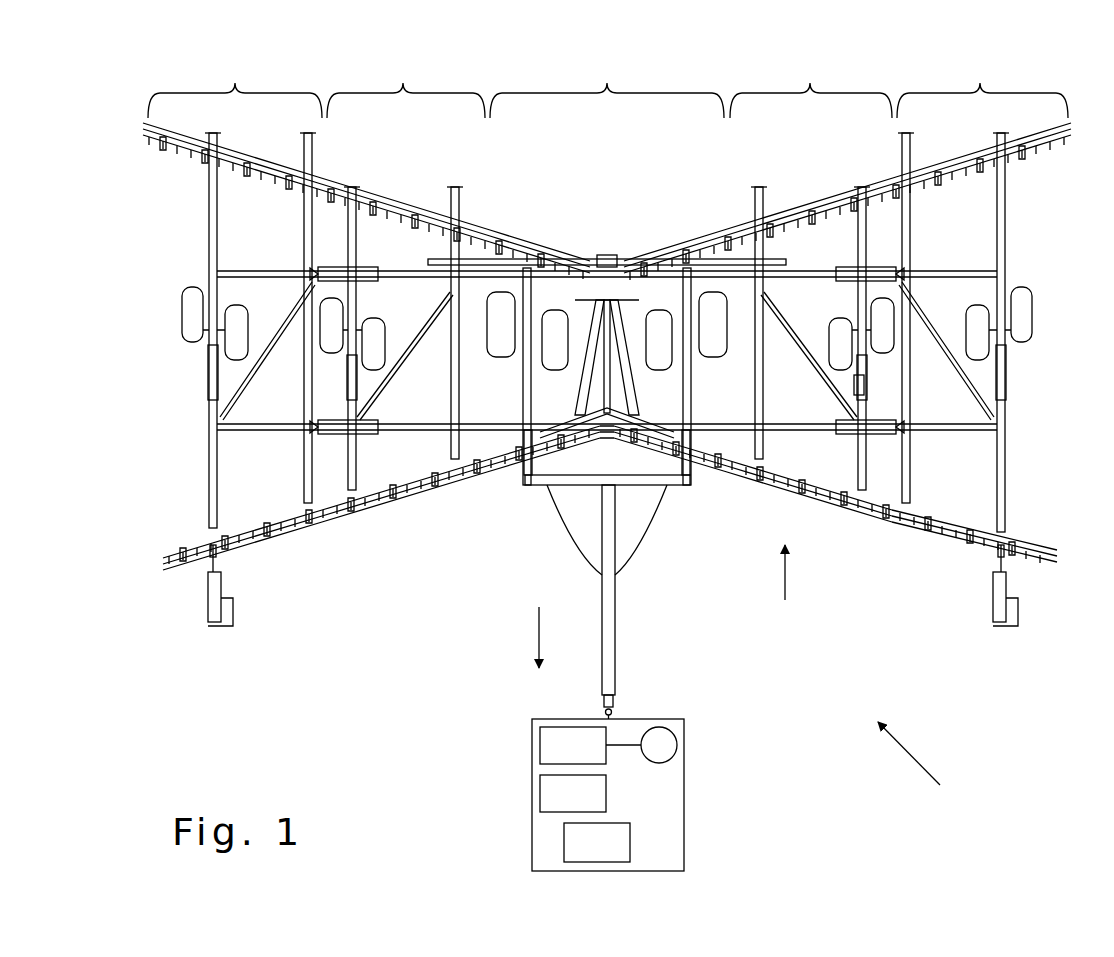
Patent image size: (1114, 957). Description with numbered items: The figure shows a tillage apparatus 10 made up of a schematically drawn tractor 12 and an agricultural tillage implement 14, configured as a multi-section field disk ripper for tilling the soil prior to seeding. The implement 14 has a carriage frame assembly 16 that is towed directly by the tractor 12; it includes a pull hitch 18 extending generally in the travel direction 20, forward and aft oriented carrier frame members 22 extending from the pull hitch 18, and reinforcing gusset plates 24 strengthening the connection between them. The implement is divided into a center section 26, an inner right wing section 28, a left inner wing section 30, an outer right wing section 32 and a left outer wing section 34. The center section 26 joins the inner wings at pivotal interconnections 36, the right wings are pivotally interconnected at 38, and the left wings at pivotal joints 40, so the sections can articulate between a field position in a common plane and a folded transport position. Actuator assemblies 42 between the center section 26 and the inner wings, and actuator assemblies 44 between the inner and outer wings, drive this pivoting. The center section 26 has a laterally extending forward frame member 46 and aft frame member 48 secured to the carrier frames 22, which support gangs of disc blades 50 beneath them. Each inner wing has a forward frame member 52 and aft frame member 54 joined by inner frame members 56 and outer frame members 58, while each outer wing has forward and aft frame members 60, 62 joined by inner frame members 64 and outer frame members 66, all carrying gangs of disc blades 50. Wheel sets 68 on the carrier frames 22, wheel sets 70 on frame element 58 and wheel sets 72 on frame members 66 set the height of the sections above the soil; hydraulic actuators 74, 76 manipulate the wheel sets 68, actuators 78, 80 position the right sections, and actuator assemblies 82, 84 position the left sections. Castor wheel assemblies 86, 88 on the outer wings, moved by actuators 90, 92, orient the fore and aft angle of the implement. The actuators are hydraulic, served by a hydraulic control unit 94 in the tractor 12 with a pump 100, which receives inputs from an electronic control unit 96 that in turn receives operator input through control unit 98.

The tillage apparatus 10 is at (921, 762).
The tractor 12 is at (685, 780).
The agricultural tillage implement 14 is at (785, 583).
The carriage frame assembly 16 is at (690, 486).
The pull hitch 18 is at (616, 640).
The travel direction 20 is at (539, 624).
The carrier frame members 22 is at (530, 482).
The reinforcing gusset plates 24 is at (570, 528).
The center section 26 is at (607, 87).
The inner right wing section 28 is at (811, 87).
The left inner wing section 30 is at (406, 87).
The outer right wing section 32 is at (982, 87).
The left outer wing section 34 is at (235, 87).
The pivotal interconnections 36 is at (500, 215).
The pivotal interconnection 38 is at (895, 175).
The pivotal joints 40 is at (318, 175).
The actuator assemblies 42 is at (560, 256).
The actuator assemblies 44 is at (400, 268).
The forward frame member 46 is at (555, 445).
The aft frame member 48 is at (587, 254).
The gangs of disc blades 50 is at (252, 150).
The forward frame member 52 is at (408, 505).
The aft frame member 54 is at (442, 190).
The inner frame members 56 is at (450, 360).
The outer frame members 58 is at (450, 300).
The forward frame member 60 is at (200, 570).
The aft frame member 62 is at (185, 122).
The inner frame members 64 is at (304, 466).
The outer frame members 66 is at (208, 462).
The wheel sets 68 is at (494, 368).
The wheel sets 70 is at (378, 378).
The wheel sets 72 is at (196, 350).
The hydraulic actuator 74 is at (535, 385).
The hydraulic actuator 76 is at (682, 385).
The actuator 78 is at (852, 385).
The actuator 80 is at (1008, 385).
The actuator assembly 82 is at (330, 415).
The actuator assembly 84 is at (208, 385).
The castor wheel assembly 86 is at (1018, 615).
The castor wheel assembly 88 is at (208, 618).
The actuator 90 is at (1012, 530).
The actuator 92 is at (192, 530).
The hydraulic control unit 94 is at (540, 742).
The electronic control unit 96 is at (540, 790).
The control unit 98 is at (620, 843).
The pump 100 is at (677, 740).